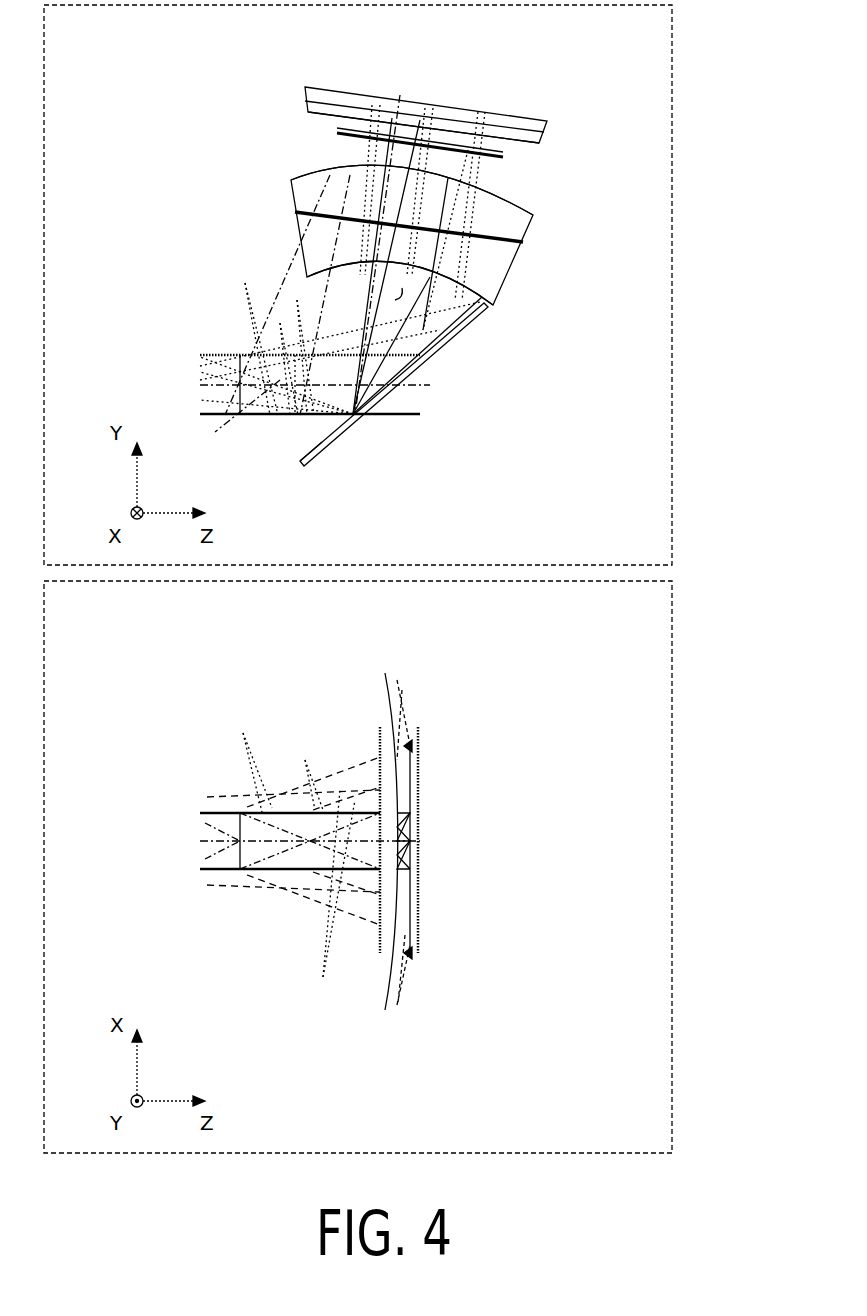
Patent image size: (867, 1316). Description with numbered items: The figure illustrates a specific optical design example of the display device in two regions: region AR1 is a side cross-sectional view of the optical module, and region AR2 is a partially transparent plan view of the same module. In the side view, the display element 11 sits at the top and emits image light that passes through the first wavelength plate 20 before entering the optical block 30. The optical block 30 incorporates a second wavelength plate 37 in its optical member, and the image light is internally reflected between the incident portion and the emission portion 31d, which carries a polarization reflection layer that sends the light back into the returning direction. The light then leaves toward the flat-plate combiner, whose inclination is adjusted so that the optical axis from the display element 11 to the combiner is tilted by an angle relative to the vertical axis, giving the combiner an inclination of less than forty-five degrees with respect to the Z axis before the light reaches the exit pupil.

The display element 11 is at (424, 104).
The first wavelength plate 20 is at (503, 157).
The optical block 30 is at (552, 232).
The emission portion 31d is at (441, 315).
The second wavelength plate 37 is at (522, 243).
The region AR1 is at (672, 60).
The region AR2 is at (673, 643).